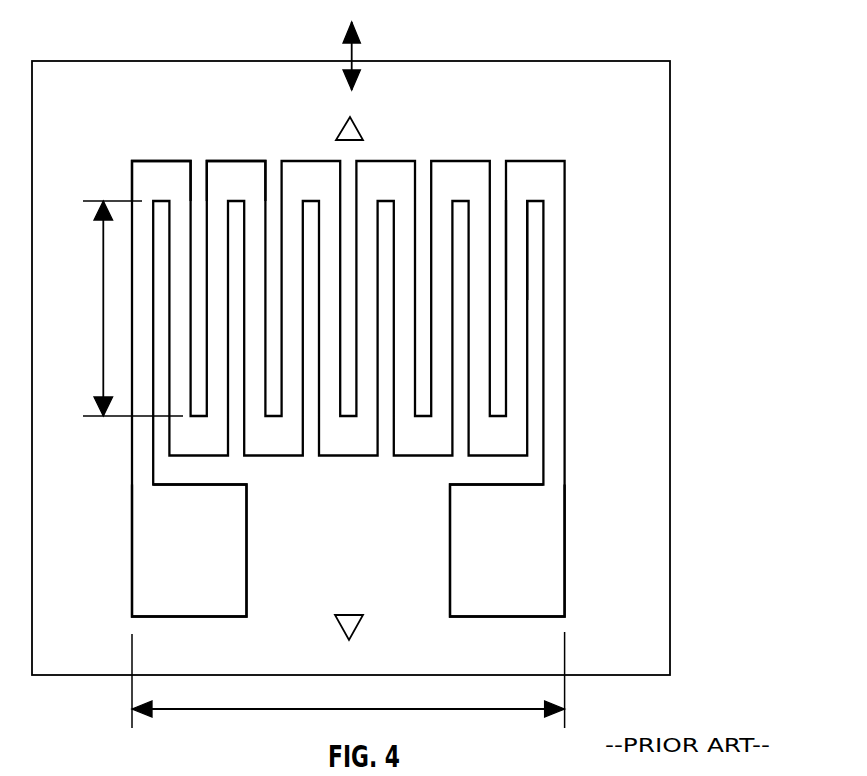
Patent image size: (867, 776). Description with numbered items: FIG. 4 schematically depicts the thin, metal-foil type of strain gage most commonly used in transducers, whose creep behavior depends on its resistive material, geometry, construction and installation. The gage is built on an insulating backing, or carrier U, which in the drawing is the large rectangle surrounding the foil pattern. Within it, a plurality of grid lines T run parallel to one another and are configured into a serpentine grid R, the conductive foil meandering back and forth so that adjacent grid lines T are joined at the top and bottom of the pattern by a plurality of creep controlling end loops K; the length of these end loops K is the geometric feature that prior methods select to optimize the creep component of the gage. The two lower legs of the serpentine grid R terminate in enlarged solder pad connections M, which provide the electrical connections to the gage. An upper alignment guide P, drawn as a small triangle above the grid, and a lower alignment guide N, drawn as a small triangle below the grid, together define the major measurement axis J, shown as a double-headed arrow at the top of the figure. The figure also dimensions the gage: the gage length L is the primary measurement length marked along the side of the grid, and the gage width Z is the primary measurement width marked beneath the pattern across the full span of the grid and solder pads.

The major measurement axis J is at (360, 55).
The upper alignment guide P is at (355, 130).
The creep controlling end loops K is at (152, 172).
The grid line W is at (275, 172).
The serpentine grid R is at (489, 157).
The grid lines T is at (516, 243).
The insulating backing (carrier) U is at (671, 320).
The gage length L is at (130, 308).
The solder pad connections M is at (153, 566).
The lower alignment guide N is at (354, 626).
The gage width Z is at (348, 686).